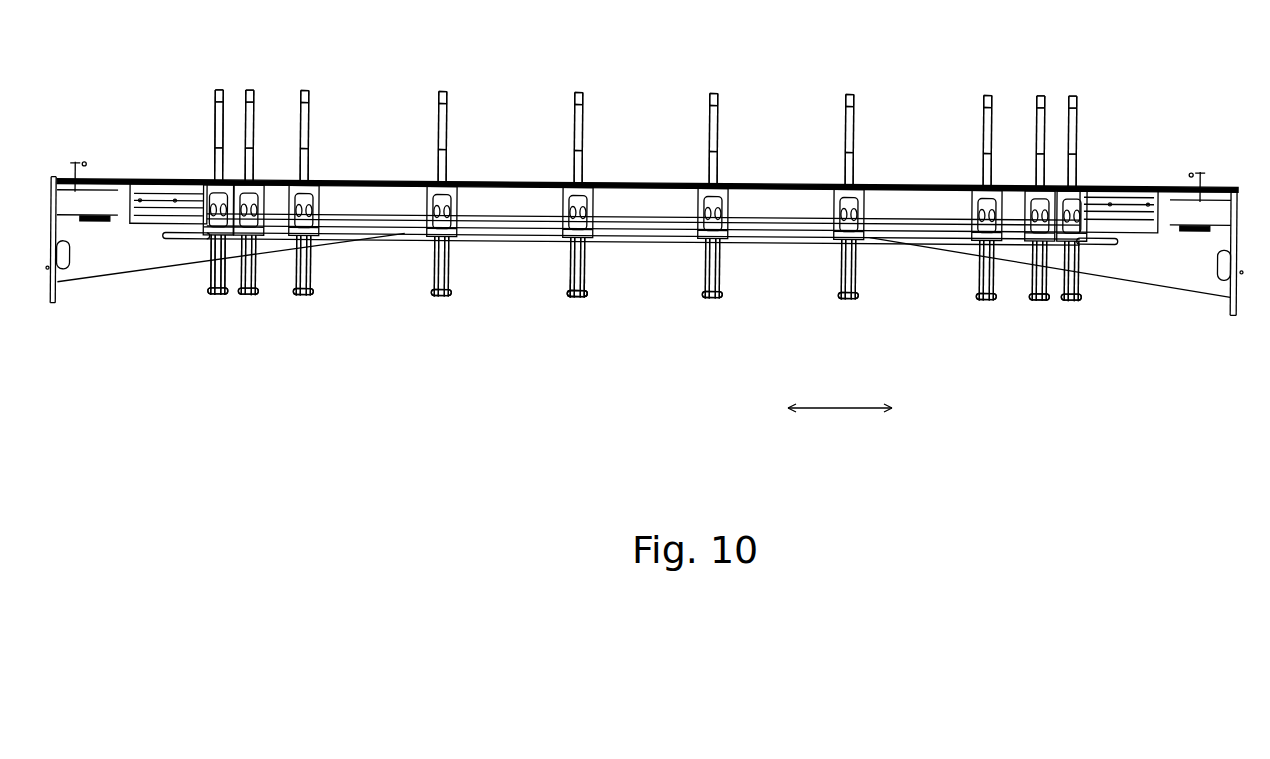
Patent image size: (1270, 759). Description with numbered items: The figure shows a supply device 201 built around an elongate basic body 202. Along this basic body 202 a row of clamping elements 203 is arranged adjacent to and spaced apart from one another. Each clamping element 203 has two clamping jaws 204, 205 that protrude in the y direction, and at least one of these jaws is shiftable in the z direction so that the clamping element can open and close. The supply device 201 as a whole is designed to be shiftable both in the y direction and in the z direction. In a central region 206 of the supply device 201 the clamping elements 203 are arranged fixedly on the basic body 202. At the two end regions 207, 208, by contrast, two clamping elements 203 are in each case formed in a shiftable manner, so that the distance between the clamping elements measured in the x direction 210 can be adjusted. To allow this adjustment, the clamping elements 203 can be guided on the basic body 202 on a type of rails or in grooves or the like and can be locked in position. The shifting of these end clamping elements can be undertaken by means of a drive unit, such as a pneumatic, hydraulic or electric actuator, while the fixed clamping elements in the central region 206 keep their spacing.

The supply device 201 is at (846, 67).
The elongate basic body 202 is at (779, 207).
The clamping element 203 is at (238, 289).
The clamping jaw 204 is at (579, 300).
The clamping jaw 205 is at (575, 247).
The central region 206 is at (988, 87).
The end region 207 is at (258, 83).
The end region 208 is at (1080, 85).
The x direction 210 is at (841, 412).